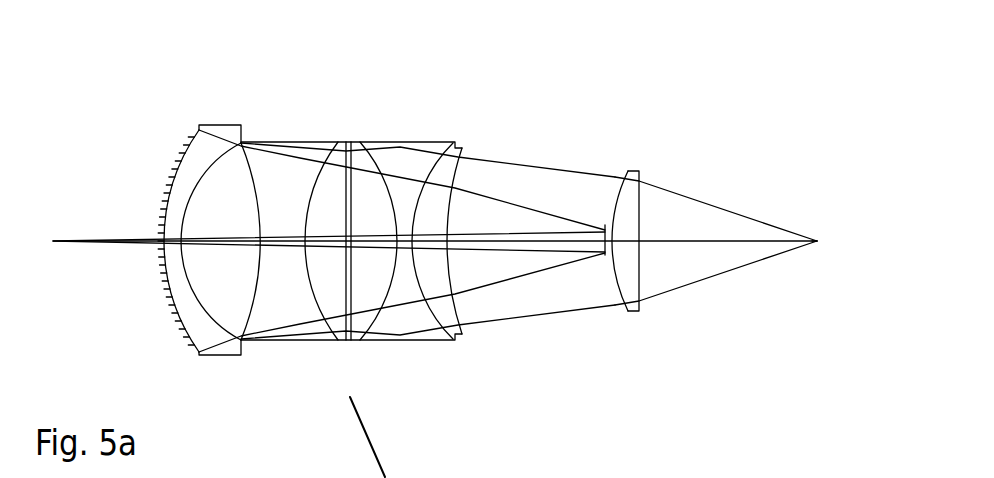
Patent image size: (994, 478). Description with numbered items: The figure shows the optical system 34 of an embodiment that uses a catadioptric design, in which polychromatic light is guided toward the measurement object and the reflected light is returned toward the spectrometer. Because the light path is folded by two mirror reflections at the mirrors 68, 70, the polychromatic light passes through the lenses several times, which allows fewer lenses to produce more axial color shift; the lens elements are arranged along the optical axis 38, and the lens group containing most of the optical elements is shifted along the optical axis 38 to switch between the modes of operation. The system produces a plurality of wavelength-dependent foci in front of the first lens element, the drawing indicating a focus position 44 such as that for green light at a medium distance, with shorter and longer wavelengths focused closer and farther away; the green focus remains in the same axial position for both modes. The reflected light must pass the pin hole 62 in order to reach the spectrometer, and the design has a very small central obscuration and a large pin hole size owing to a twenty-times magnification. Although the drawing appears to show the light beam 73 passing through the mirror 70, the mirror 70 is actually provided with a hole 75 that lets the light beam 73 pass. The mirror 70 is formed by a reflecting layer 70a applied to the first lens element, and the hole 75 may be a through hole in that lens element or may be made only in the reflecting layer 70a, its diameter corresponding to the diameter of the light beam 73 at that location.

The optical system 34 is at (690, 102).
The optical axis 38 is at (742, 244).
The focus position 44 is at (817, 239).
The pin hole 62 is at (53, 240).
The mirror 68 is at (606, 258).
The mirror 70 is at (200, 356).
The reflecting layer 70a is at (180, 340).
The light beam 73 is at (127, 246).
The hole 75 is at (153, 237).